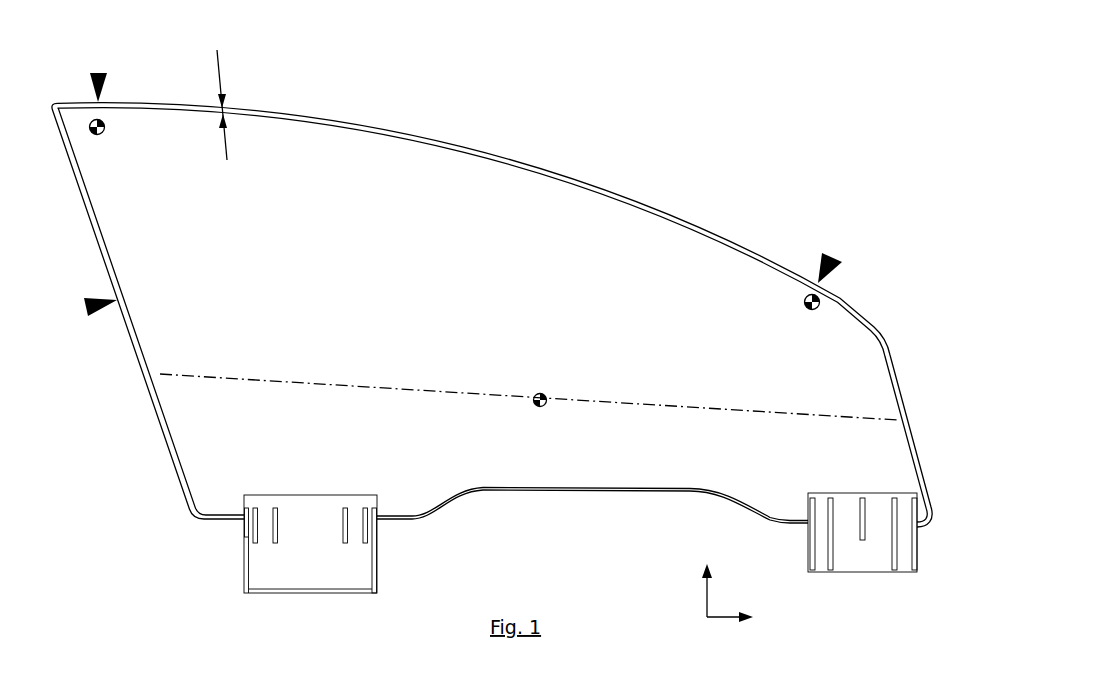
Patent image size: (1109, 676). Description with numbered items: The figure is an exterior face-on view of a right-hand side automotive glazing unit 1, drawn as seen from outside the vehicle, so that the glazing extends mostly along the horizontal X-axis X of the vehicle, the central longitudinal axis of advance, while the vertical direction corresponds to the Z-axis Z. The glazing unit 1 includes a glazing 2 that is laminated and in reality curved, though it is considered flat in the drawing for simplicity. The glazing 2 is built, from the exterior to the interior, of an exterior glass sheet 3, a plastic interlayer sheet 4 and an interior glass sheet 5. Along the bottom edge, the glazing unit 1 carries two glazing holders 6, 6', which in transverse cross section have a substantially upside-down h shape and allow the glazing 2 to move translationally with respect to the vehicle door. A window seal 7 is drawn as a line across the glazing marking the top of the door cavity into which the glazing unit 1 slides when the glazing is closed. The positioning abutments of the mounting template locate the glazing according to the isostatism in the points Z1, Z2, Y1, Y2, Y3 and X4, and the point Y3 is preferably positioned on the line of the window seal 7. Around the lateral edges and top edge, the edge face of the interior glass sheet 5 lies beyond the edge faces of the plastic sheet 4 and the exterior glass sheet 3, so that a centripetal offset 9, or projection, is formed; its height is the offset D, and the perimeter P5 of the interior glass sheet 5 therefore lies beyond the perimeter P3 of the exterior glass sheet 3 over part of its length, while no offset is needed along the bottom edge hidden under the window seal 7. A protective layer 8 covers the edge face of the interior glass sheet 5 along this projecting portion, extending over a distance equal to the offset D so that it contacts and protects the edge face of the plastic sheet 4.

The glazing unit 1 is at (588, 124).
The glazing 2 is at (345, 130).
The exterior glass sheet 3 is at (612, 210).
The plastic interlayer sheet 4 is at (612, 210).
The interior glass sheet 5 is at (678, 213).
The glazing holder 6 is at (263, 544).
The glazing holder 6' is at (882, 532).
The window seal 7 is at (860, 416).
The protective layer 8 is at (462, 147).
The centripetal offset 9 is at (320, 119).
The offset height D is at (231, 105).
The positioning abutment point Y1 is at (793, 315).
The positioning abutment point Y2 is at (112, 134).
The positioning abutment point Y3 is at (528, 407).
The positioning abutment point Z1 is at (837, 259).
The positioning abutment point Z2 is at (106, 69).
The positioning abutment point X4 is at (80, 323).
The perimeter of the exterior glass sheet P3 is at (170, 427).
The perimeter of the interior glass sheet P5 is at (178, 470).
The X-axis X is at (741, 614).
The Z-axis Z is at (700, 576).